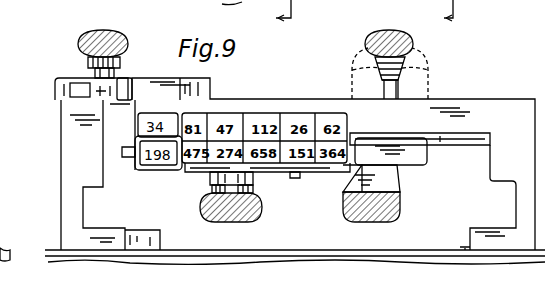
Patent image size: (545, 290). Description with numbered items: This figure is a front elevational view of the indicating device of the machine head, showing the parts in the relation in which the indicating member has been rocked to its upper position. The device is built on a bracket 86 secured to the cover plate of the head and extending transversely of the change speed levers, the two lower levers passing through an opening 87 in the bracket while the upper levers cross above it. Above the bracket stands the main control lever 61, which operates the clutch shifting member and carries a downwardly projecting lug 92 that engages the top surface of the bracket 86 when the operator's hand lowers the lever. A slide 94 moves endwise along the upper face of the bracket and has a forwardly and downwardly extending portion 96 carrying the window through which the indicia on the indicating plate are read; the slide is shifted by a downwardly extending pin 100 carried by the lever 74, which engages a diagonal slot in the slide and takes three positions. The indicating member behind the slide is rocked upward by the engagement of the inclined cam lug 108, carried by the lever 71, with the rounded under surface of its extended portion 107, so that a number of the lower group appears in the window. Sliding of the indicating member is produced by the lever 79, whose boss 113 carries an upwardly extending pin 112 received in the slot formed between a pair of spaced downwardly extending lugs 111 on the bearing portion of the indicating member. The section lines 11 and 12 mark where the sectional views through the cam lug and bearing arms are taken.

The section line 11— 11 is at (270, 13).
The section line 12— 12 is at (435, 14).
The main control lever 61 is at (376, 36).
The lever 71 is at (380, 210).
The lever 74 is at (128, 42).
The lever 79 is at (208, 214).
The bracket 86 is at (490, 100).
The opening 87 is at (275, 233).
The downwardly projecting lug 92 is at (364, 70).
The slide 94 is at (124, 80).
The forwardly and downwardly extending portion 96 is at (150, 97).
The downwardly extending pin 100 is at (92, 78).
The extended portion 107 is at (400, 162).
The cam lug 108 is at (352, 176).
The downwardly extending lugs 111 is at (210, 178).
The pin 112 is at (212, 190).
The boss 113 is at (253, 190).